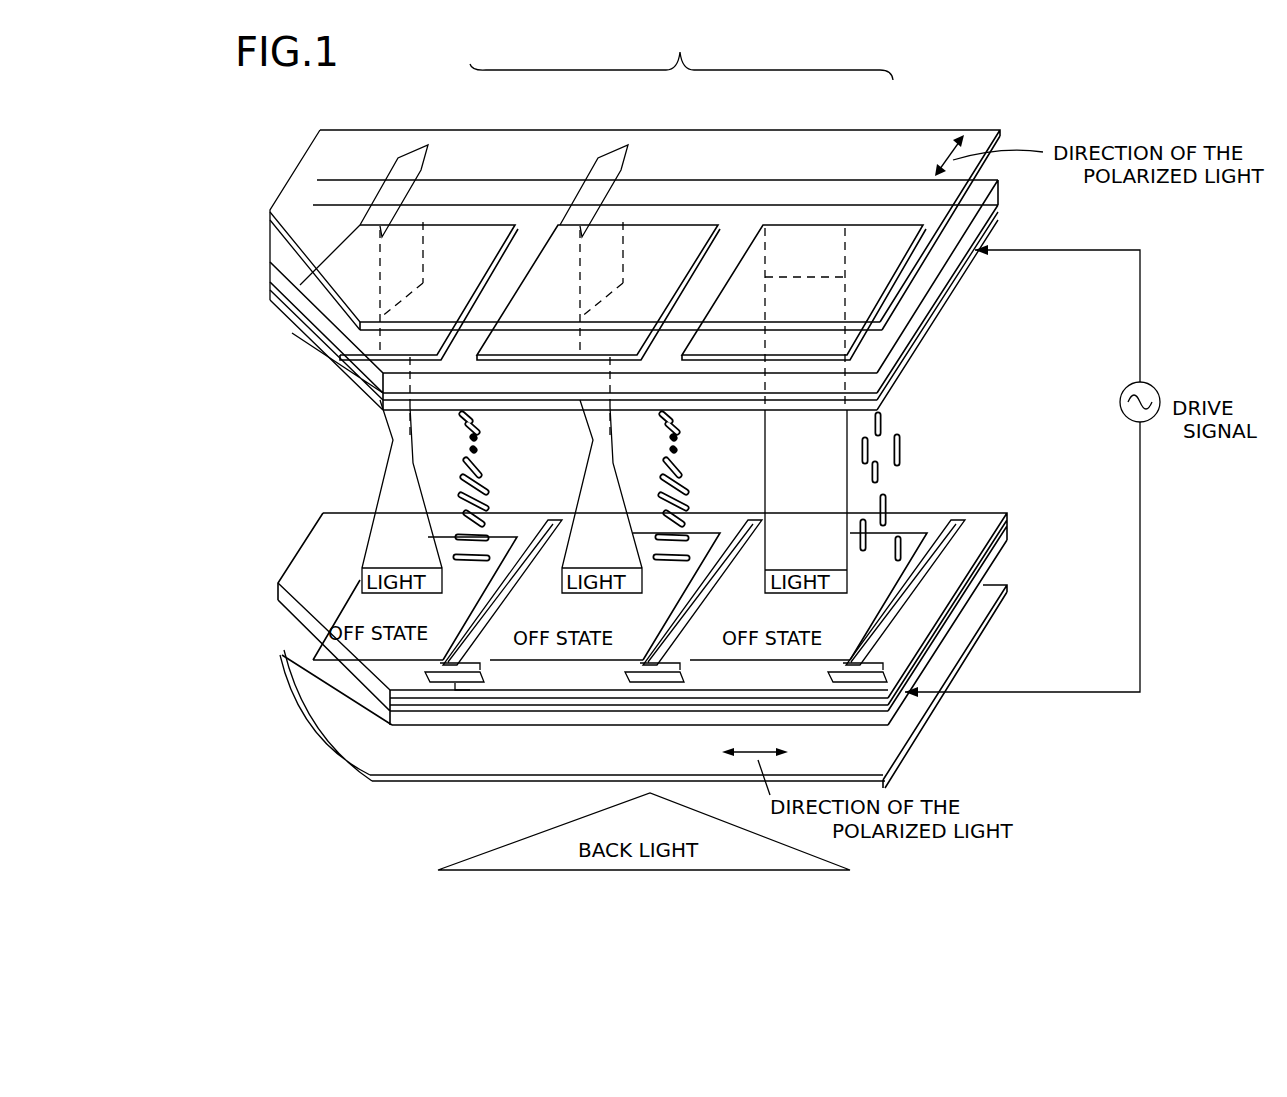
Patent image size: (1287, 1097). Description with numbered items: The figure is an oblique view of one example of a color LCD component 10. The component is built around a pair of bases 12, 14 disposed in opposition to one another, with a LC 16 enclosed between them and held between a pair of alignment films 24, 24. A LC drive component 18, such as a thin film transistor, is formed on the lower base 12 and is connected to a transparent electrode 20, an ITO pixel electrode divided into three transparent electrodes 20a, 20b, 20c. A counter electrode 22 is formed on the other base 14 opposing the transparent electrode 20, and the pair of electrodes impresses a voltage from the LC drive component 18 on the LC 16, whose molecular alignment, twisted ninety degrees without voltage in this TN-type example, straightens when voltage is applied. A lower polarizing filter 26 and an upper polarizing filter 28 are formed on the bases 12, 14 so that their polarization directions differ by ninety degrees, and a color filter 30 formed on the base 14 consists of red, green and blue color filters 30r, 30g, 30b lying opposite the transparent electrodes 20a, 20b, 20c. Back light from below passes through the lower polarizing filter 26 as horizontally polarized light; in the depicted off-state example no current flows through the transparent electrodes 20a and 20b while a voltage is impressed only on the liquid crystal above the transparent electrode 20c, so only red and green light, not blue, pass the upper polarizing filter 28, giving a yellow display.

The color LCD component 10 is at (276, 171).
The base 12 is at (327, 690).
The base 14 is at (260, 256).
The LC 16 is at (916, 442).
The LC drive component 18 is at (432, 676).
The transparent electrode 20 is at (310, 650).
The transparent electrode 20a is at (347, 583).
The transparent electrode 20b is at (700, 543).
The transparent electrode 20c is at (900, 552).
The counter electrode 22 is at (258, 278).
The alignment film 24 is at (258, 303).
The lower polarizing filter 26 is at (320, 754).
The upper polarizing filter 28 is at (367, 150).
The color filter 30 is at (681, 51).
The color filter 30r is at (480, 231).
The color filter 30g is at (671, 235).
The color filter 30b is at (872, 240).